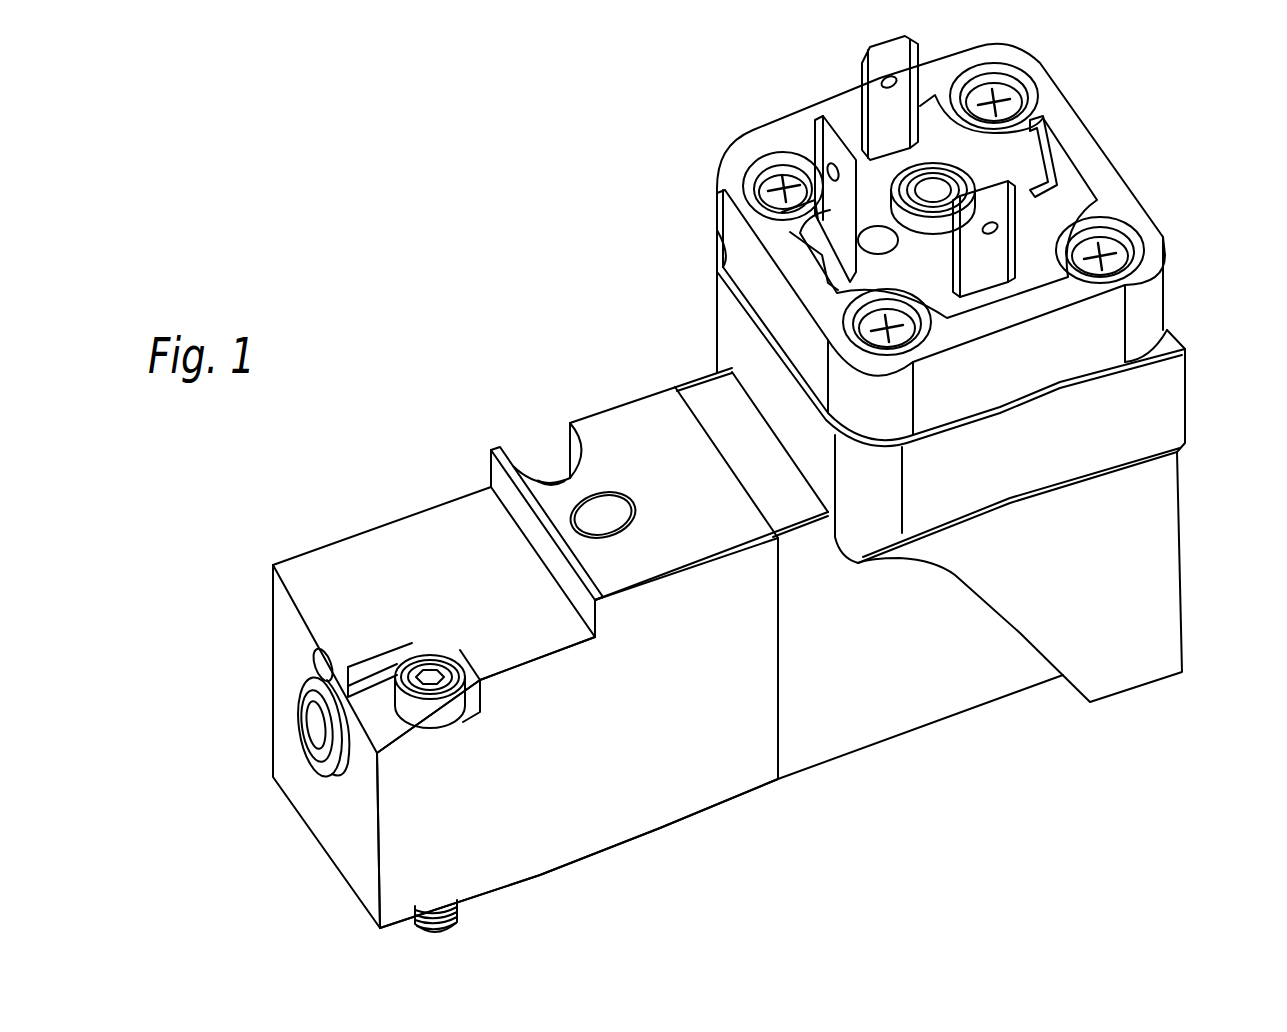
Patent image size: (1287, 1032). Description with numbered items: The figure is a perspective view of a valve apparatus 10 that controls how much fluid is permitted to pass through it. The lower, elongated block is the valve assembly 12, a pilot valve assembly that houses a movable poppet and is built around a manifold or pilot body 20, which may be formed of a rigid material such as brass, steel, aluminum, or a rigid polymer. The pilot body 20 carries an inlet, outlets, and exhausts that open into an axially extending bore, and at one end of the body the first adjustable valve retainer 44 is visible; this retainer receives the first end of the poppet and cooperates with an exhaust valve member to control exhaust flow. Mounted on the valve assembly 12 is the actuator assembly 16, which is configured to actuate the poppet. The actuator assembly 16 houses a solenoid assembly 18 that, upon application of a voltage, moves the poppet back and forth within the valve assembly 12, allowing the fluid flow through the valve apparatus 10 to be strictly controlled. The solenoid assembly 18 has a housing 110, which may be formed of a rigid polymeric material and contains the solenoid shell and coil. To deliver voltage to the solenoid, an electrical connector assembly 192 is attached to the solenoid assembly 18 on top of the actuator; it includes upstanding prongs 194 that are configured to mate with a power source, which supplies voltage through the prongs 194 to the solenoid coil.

The valve apparatus 10 is at (555, 322).
The valve assembly 12 is at (642, 835).
The actuator assembly 16 is at (1033, 58).
The solenoid assembly 18 is at (892, 737).
The pilot body 20 is at (652, 758).
The first adjustable valve retainer 44 is at (336, 756).
The housing 110 is at (1135, 662).
The electrical connector assembly 192 is at (1143, 207).
The prongs 194 is at (862, 80).